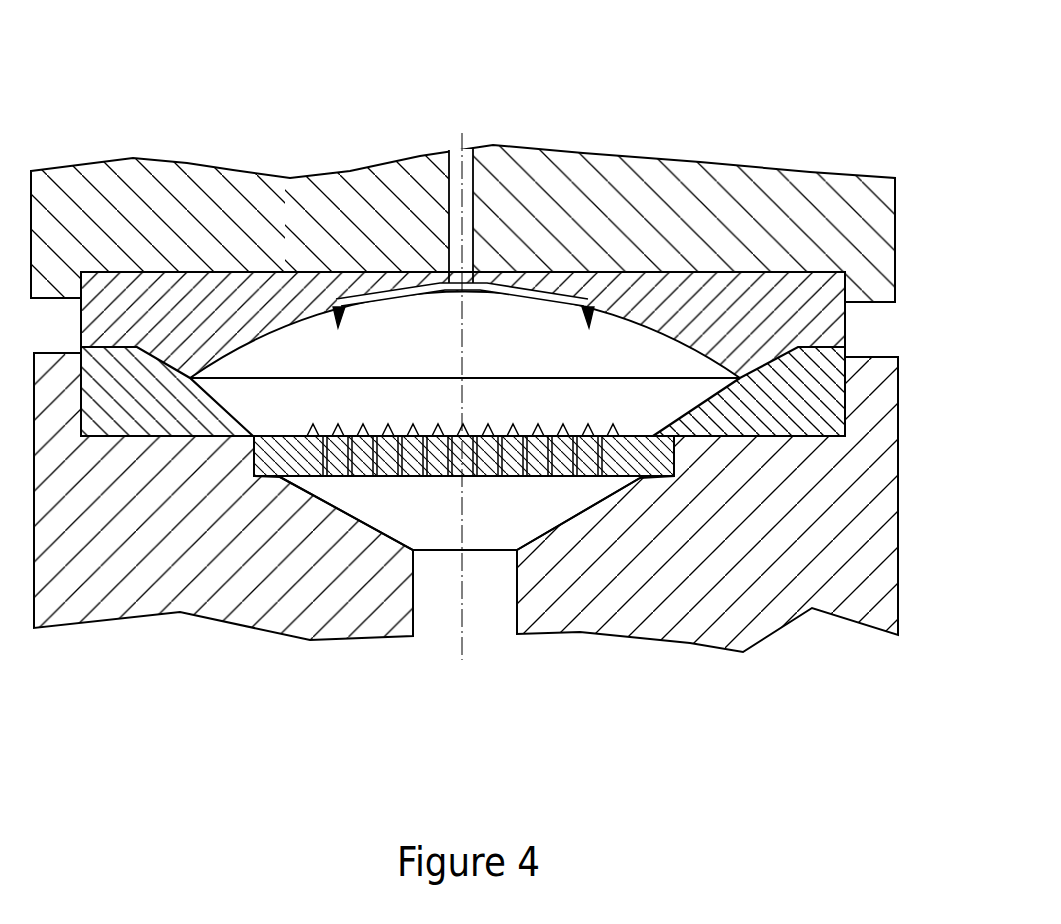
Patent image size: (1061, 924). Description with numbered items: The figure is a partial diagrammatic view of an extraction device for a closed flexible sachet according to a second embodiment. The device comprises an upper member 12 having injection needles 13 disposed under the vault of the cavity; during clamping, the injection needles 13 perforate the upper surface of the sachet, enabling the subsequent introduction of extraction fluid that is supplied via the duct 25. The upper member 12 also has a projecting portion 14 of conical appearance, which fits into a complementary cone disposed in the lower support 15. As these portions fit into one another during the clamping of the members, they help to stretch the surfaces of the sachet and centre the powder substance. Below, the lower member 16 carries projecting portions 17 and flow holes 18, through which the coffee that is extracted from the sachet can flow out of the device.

The upper member 12 is at (153, 217).
The injection needles 13 is at (333, 318).
The projecting portion 14 is at (733, 320).
The lower support 15 is at (143, 543).
The lower member 16 is at (283, 457).
The projecting portions 17 is at (517, 483).
The flow holes 18 is at (580, 480).
The duct 25 is at (452, 160).